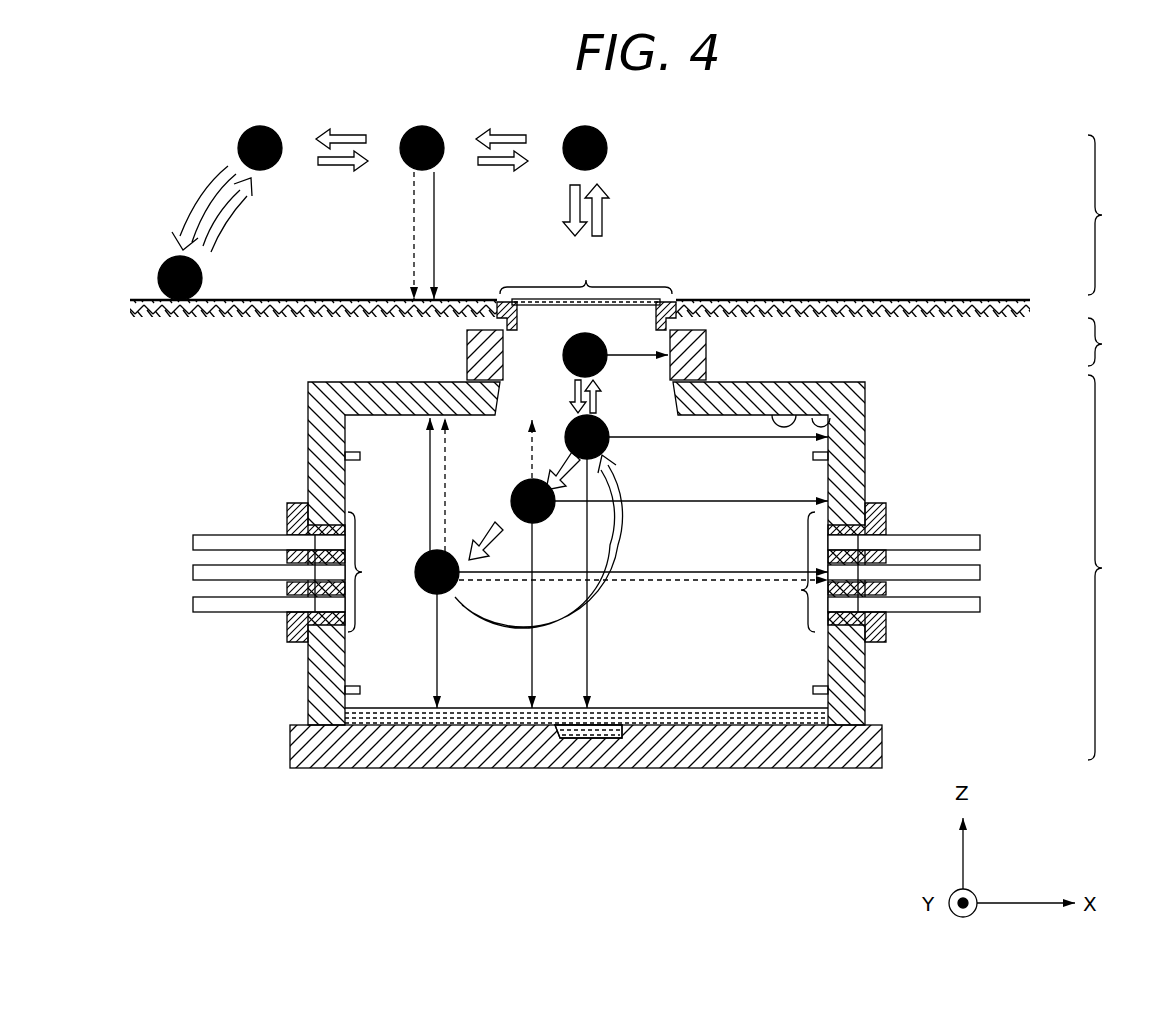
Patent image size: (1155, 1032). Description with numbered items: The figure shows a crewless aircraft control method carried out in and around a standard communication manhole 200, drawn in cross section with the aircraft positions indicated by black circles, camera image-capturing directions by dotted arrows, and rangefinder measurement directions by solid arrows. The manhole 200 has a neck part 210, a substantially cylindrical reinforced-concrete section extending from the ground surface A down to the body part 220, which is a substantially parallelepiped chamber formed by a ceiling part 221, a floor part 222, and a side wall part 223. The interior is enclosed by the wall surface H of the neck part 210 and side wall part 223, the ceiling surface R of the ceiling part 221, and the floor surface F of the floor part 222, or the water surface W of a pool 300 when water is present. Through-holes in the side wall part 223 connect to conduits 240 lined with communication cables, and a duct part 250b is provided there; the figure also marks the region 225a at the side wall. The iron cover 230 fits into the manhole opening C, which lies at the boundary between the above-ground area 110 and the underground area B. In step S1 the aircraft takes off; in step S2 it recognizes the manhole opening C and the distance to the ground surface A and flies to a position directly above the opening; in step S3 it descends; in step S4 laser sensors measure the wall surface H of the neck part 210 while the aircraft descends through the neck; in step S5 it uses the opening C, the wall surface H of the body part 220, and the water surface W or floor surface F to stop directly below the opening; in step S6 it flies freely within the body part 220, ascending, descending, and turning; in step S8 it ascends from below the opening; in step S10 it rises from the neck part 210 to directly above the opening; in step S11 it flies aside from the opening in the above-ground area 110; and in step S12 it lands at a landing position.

The above-ground area 110 is at (1117, 215).
The neck part 210 is at (1117, 342).
The body part 220 is at (1117, 567).
The manhole 200 is at (650, 252).
The ceiling part 221 is at (390, 396).
The floor part 222 is at (740, 770).
The side wall part 223 is at (852, 468).
The feed-through holes 225a is at (783, 572).
The iron cover 230 is at (539, 304).
The conduits 240 is at (228, 544).
The duct part 250b is at (383, 572).
The pool 300 is at (586, 737).
The ground surface A is at (946, 299).
The underground area B is at (955, 363).
The manhole opening C is at (586, 273).
The wall surface H is at (820, 425).
The ceiling surface R is at (795, 420).
The water surface W is at (402, 707).
The floor surface F is at (486, 708).
The step S1 is at (227, 215).
The step S2 is at (423, 173).
The step S3 is at (562, 210).
The step S4 is at (567, 396).
The step S5 is at (604, 452).
The step S6 is at (552, 535).
The step S8 is at (626, 396).
The step S10 is at (617, 210).
The step S11 is at (421, 126).
The step S12 is at (194, 208).